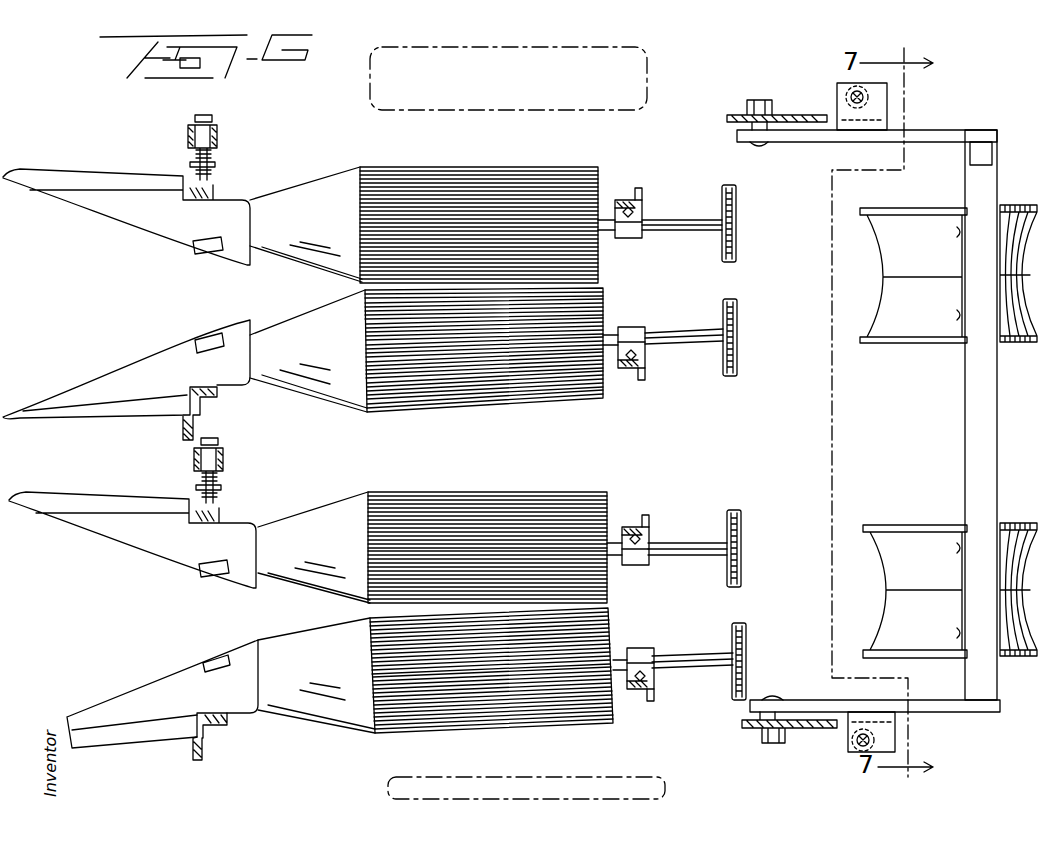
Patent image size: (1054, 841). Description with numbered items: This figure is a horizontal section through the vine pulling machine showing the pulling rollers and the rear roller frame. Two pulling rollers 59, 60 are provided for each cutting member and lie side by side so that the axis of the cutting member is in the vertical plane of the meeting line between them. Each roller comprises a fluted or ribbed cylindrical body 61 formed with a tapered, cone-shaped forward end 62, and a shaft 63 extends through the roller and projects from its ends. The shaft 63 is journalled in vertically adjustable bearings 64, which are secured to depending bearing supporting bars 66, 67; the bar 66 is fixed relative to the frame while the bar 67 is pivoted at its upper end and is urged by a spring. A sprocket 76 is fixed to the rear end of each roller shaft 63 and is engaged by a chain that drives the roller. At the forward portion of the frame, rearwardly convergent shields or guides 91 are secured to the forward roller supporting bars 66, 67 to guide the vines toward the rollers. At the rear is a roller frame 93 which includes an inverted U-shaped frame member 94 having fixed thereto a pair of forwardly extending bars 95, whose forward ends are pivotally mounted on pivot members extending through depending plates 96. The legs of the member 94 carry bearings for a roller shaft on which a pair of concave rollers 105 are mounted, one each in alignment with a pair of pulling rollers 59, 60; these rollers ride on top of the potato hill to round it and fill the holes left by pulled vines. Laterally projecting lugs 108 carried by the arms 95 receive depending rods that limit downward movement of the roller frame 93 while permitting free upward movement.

The roller 59 is at (489, 483).
The roller 60 is at (561, 733).
The fluted cylindrical body 61 is at (425, 492).
The cone-shaped forward end 62 is at (322, 513).
The shaft 63 is at (672, 542).
The bearing 64 is at (643, 643).
The bearing supporting bar 66 is at (222, 723).
The bearing supporting bar 67 is at (222, 520).
The sprocket 76 is at (745, 528).
The shield 91 is at (145, 693).
The roller frame 93 is at (955, 405).
The inverted U-shaped frame member 94 is at (983, 395).
The forwardly extending bar 95 is at (927, 130).
The depending plate 96 is at (817, 728).
The concave roller 105 is at (898, 538).
The lug 108 is at (837, 93).